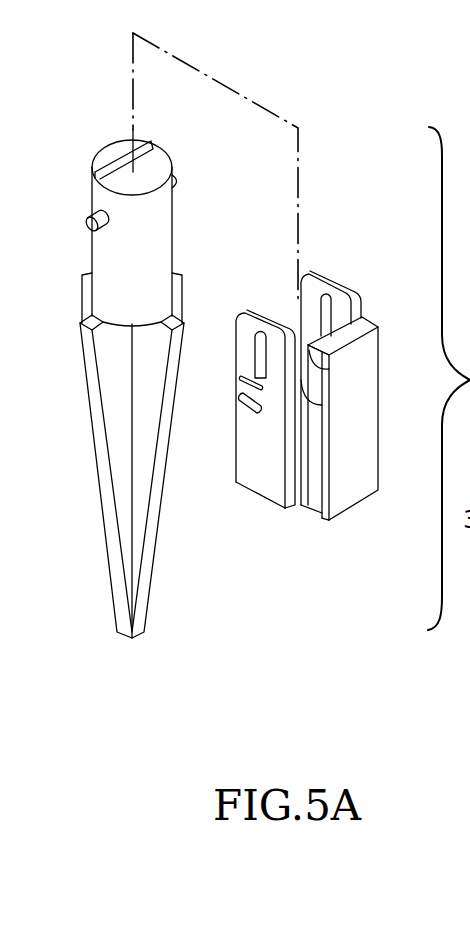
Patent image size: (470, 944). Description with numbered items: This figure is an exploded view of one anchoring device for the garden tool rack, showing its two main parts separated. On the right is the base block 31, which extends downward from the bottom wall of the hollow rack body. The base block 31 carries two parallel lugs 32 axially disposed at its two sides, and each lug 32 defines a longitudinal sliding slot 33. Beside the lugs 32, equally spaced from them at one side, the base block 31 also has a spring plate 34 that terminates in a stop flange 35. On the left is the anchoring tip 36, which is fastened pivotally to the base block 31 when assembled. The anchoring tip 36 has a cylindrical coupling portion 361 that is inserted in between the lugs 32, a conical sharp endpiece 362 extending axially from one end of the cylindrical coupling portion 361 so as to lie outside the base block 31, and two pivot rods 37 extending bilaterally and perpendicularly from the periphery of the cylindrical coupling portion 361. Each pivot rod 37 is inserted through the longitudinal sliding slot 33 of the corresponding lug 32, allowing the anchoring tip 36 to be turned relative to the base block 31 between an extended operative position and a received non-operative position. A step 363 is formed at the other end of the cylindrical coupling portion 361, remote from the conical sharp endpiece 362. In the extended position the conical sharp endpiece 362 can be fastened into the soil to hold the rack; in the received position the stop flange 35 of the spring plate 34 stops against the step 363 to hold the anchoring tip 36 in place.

The base block 31 is at (309, 494).
The lug 32 is at (248, 310).
The longitudinal sliding slot 33 is at (257, 353).
The spring plate 34 is at (378, 380).
The stop flange 35 is at (320, 358).
The anchoring tip 36 is at (143, 433).
The cylindrical coupling portion 361 is at (165, 217).
The conical sharp endpiece 362 is at (145, 593).
The step 363 is at (117, 148).
The pivot rod 37 is at (181, 178).